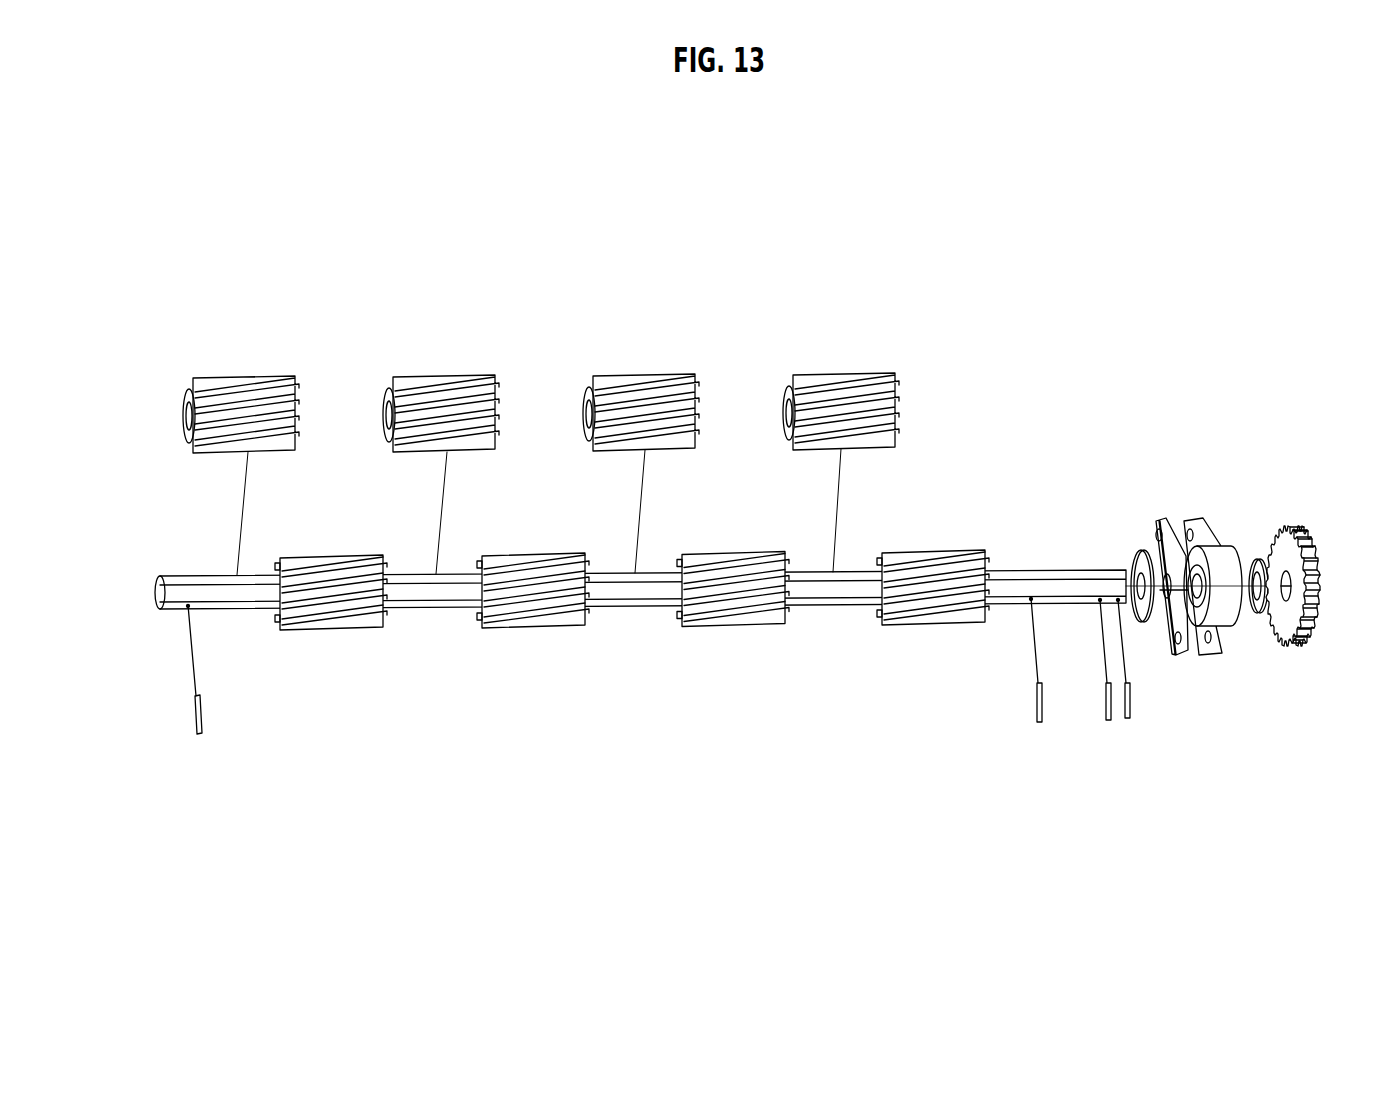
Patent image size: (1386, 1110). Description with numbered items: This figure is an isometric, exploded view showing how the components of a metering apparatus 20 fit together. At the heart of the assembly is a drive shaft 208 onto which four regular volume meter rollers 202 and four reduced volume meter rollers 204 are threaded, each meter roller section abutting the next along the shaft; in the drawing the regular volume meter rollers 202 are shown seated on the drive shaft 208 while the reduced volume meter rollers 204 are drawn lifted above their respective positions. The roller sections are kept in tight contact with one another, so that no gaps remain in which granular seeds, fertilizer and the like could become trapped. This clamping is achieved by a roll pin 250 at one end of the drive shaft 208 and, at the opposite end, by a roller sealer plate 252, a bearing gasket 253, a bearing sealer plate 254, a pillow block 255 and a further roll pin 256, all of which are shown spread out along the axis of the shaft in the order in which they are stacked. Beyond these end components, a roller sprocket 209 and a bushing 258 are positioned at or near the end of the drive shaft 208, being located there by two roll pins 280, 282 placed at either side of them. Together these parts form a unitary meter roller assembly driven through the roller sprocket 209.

The metering apparatus 20 is at (380, 793).
The regular volume meter roller 202 is at (333, 630).
The reduced volume meter roller 204 is at (246, 375).
The drive shaft 208 is at (637, 592).
The roller sprocket 209 is at (1297, 652).
The roll pin 250 is at (196, 720).
The roller sealer plate 252 is at (1137, 550).
The bearing gasket 253 is at (1157, 518).
The bearing sealer plate 254 is at (1167, 517).
The pillow block 255 is at (1212, 533).
The roll pin 256 is at (1037, 715).
The bushing 258 is at (1253, 625).
The roll pin 280 is at (1106, 712).
The roll pin 282 is at (1130, 710).